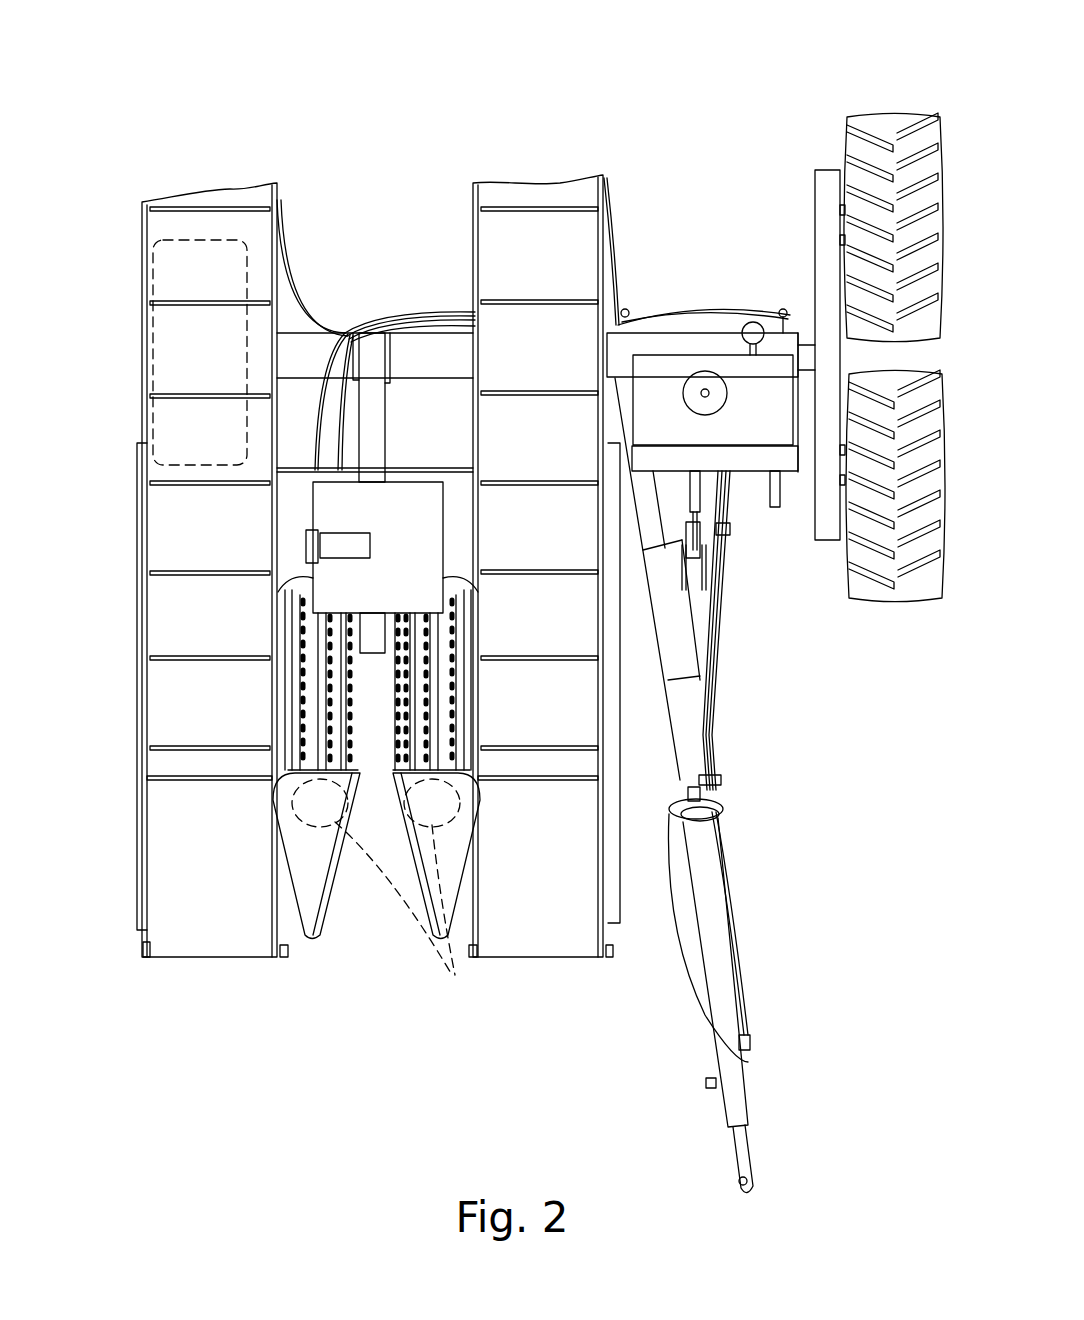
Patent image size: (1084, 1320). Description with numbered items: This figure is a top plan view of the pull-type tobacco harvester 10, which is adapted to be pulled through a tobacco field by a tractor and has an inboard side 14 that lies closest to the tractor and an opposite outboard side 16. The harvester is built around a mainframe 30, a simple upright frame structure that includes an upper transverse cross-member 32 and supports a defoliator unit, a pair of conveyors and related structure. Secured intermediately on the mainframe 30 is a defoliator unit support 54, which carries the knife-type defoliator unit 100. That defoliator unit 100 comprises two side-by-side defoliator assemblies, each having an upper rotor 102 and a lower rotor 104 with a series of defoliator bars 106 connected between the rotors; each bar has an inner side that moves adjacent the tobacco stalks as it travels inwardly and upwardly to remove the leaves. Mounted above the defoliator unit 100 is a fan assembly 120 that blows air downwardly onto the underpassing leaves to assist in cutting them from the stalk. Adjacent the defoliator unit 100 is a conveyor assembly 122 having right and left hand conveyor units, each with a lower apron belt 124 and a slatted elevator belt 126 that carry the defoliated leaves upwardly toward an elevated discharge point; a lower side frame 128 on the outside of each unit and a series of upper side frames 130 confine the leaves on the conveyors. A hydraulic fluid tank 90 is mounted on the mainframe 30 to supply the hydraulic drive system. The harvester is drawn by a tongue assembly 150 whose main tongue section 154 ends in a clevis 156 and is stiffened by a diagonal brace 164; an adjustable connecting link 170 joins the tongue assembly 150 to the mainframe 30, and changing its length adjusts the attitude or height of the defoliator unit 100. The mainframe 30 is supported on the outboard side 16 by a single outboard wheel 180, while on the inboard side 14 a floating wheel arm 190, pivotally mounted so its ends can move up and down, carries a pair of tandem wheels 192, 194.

The pull-type tobacco harvester 10 is at (568, 118).
The inboard side 14 is at (827, 758).
The outboard side 16 is at (118, 510).
The mainframe 30 is at (710, 283).
The upper transverse cross-member 32 is at (625, 348).
The defoliator unit support 54 is at (373, 440).
The hydraulic fluid tank 90 is at (762, 375).
The knife-type defoliator unit 100 is at (372, 893).
The upper rotor 102 is at (312, 572).
The lower rotor 104 is at (407, 912).
The defoliator bars 106 is at (290, 720).
The fan assembly 120 is at (374, 567).
The conveyor assembly 122 is at (122, 927).
The lower apron belt 124 is at (372, 823).
The elevator belt 126 is at (385, 703).
The lower side frame 128 is at (145, 840).
The upper side frames 130 is at (142, 240).
The tongue assembly 150 is at (745, 640).
The main tongue section 154 is at (708, 933).
The clevis 156 is at (742, 1170).
The diagonal brace 164 is at (713, 488).
The adjustable connecting link 170 is at (700, 494).
The outboard wheel 180 is at (230, 322).
The floating wheel arm 190 is at (830, 363).
The tandem wheel 192 is at (903, 140).
The tandem wheel 194 is at (905, 590).